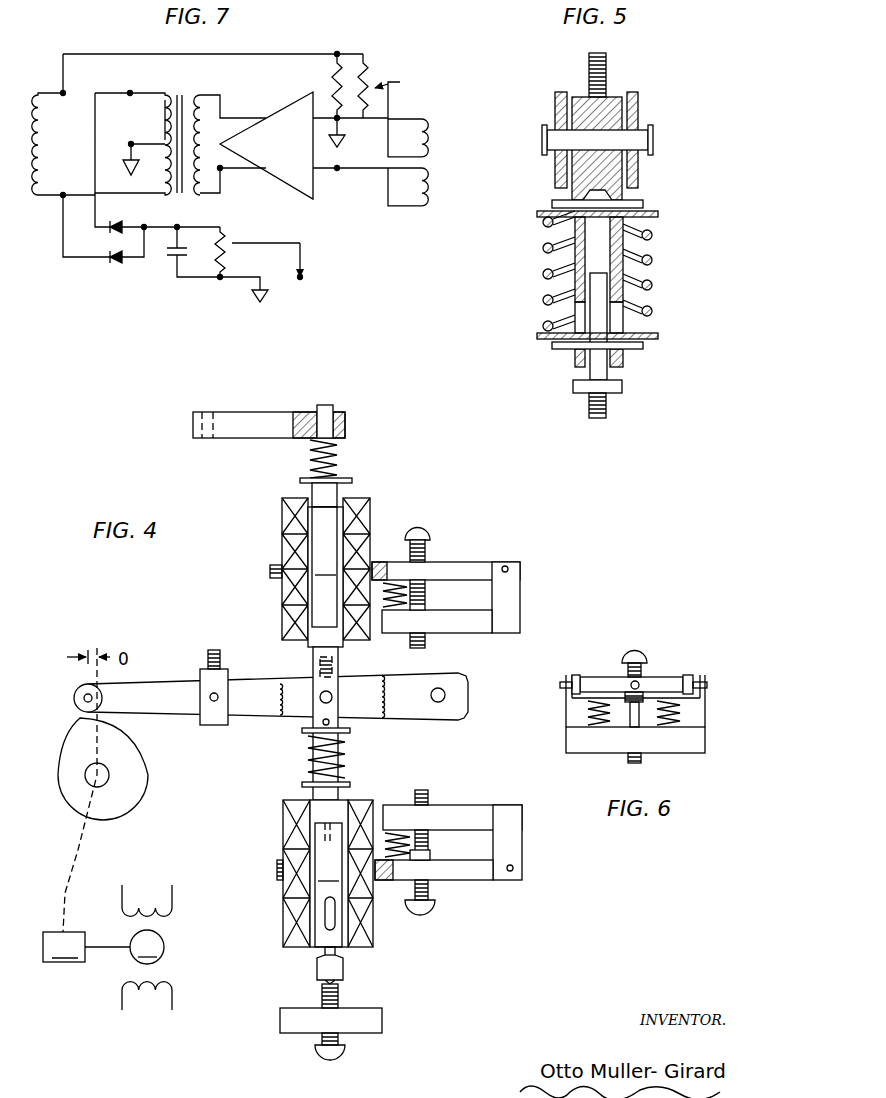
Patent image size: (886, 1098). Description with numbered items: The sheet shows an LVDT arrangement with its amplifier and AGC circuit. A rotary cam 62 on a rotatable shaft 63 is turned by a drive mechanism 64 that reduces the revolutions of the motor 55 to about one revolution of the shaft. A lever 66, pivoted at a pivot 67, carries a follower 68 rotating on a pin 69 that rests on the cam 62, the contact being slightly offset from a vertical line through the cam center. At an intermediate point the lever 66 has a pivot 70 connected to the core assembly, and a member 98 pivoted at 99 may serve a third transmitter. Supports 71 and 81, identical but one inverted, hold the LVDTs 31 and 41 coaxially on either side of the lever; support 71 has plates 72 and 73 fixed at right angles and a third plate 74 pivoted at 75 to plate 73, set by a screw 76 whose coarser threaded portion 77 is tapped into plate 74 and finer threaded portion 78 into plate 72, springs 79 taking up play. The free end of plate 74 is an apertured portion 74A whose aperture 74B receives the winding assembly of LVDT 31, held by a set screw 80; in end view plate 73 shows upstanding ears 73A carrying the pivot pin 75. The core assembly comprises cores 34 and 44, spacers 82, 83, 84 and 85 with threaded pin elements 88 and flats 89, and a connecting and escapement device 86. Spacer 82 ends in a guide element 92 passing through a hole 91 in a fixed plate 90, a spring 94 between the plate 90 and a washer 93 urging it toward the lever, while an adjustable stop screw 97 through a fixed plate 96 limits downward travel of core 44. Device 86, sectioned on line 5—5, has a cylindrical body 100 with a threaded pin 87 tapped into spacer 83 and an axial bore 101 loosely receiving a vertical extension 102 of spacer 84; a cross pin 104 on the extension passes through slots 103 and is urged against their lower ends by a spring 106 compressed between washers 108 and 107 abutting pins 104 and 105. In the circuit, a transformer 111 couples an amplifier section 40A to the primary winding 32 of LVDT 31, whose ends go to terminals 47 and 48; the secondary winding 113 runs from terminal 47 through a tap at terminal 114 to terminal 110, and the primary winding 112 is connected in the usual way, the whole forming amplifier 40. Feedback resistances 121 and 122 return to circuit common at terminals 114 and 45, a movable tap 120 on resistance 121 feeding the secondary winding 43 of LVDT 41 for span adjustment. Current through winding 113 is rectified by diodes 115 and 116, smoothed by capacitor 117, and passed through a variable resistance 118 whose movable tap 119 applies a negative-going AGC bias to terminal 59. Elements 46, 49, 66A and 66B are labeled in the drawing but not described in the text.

In FIG. 7, the primary winding 32 is at (46, 77).
In FIG. 7, the terminal 48 is at (64, 92).
In FIG. 7, the terminal 47 is at (62, 197).
In FIG. 7, the terminal 110 is at (131, 92).
In FIG. 7, the transformer 111 is at (182, 93).
In FIG. 7, the primary winding 112 is at (201, 117).
In FIG. 7, the secondary winding 113 is at (165, 118).
In FIG. 7, the terminal 114 is at (136, 132).
In FIG. 7, the amplifier section 40A is at (266, 145).
In FIG. 7, the amplifier 40 is at (230, 178).
In FIG. 7, the secondary winding 43 is at (425, 123).
In FIG. 7, the terminal 45 is at (340, 122).
In FIG. 7, the output terminal 46 is at (340, 172).
In FIG. 7, the rectifier 49 is at (136, 265).
In FIG. 7, the diode 115 is at (107, 229).
In FIG. 7, the diode 116 is at (107, 259).
In FIG. 7, the capacitor 117 is at (172, 258).
In FIG. 7, the variable resistance 118 is at (218, 265).
In FIG. 7, the movable tap 119 is at (235, 242).
In FIG. 7, the movable tap 120 is at (400, 82).
In FIG. 7, the feedback resistance 121 is at (367, 77).
In FIG. 7, the feedback resistance 122 is at (339, 65).
In FIG. 7, the terminal 59 is at (302, 279).
In FIG. 5, the threaded pin 87 is at (607, 72).
In FIG. 4, the threaded pin 87 is at (318, 665).
In FIG. 5, the sleeve half 66B is at (639, 103).
In FIG. 4, the sleeve half 66B is at (365, 700).
In FIG. 5, the sleeve half 66A is at (556, 172).
In FIG. 4, the sleeve half 66A is at (425, 713).
In FIG. 5, the pivot 70 is at (654, 136).
In FIG. 4, the pivot 70 is at (320, 701).
In FIG. 5, the cylindrical body 100 is at (625, 192).
In FIG. 4, the cylindrical body 100 is at (318, 756).
In FIG. 5, the cross pin 105 is at (644, 204).
In FIG. 4, the cross pin 105 is at (351, 730).
In FIG. 5, the washer 107 is at (650, 216).
In FIG. 4, the washer 107 is at (312, 736).
In FIG. 5, the axial bore 101 is at (597, 233).
In FIG. 5, the connecting and escapement device 86 is at (534, 250).
In FIG. 4, the connecting and escapement device 86 is at (362, 751).
In FIG. 5, the spring 106 is at (650, 287).
In FIG. 4, the spring 106 is at (318, 771).
In FIG. 5, the vertically extending slots 103 is at (580, 320).
In FIG. 5, the cross pin 104 is at (640, 353).
In FIG. 4, the cross pin 104 is at (325, 790).
In FIG. 5, the washer 108 is at (545, 339).
In FIG. 4, the washer 108 is at (346, 784).
In FIG. 5, the vertical extension 102 is at (608, 372).
In FIG. 5, the spacer 84 is at (623, 386).
In FIG. 4, the spacer 84 is at (336, 791).
In FIG. 4, the fixed plate 90 is at (258, 432).
In FIG. 4, the hole 91 is at (203, 420).
In FIG. 4, the vertical guide element 92 is at (330, 406).
In FIG. 4, the washer 93 is at (340, 472).
In FIG. 4, the spring 94 is at (344, 440).
In FIG. 4, the spacer 82 is at (338, 490).
In FIG. 4, the LVDT 31 is at (280, 527).
In FIG. 4, the core 34 is at (325, 577).
In FIG. 4, the apertured portion 74A is at (276, 566).
In FIG. 4, the set screw 80 is at (275, 578).
In FIG. 6, the set screw 80 is at (640, 684).
In FIG. 4, the LVDT support 71 is at (524, 571).
In FIG. 4, the third plate 74 is at (474, 568).
In FIG. 4, the plate 73 is at (522, 600).
In FIG. 4, the plate 72 is at (455, 630).
In FIG. 6, the plate 72 is at (701, 746).
In FIG. 4, the pivot 75 is at (508, 568).
In FIG. 6, the pivot 75 is at (708, 690).
In FIG. 4, the screw 76 is at (410, 527).
In FIG. 6, the screw 76 is at (646, 656).
In FIG. 4, the threaded portion 77 is at (428, 552).
In FIG. 6, the threaded portion 77 is at (620, 672).
In FIG. 4, the threaded portion 78 is at (425, 601).
In FIG. 6, the threaded portion 78 is at (632, 715).
In FIG. 4, the springs 79 is at (385, 608).
In FIG. 6, the springs 79 is at (682, 710).
In FIG. 4, the lever 66 is at (140, 684).
In FIG. 4, the follower 68 is at (75, 693).
In FIG. 4, the pin 69 is at (83, 700).
In FIG. 4, the pivot 67 is at (447, 695).
In FIG. 4, the rotary cam 62 is at (150, 778).
In FIG. 4, the rotatable shaft 63 is at (79, 853).
In FIG. 4, the drive mechanism 64 is at (86, 947).
In FIG. 4, the motor 55 is at (147, 947).
In FIG. 4, the member 98 is at (205, 672).
In FIG. 4, the pivot 99 is at (214, 706).
In FIG. 4, the spacer 83 is at (338, 656).
In FIG. 4, the section line 5 is at (290, 655).
In FIG. 4, the LVDT 41 is at (280, 921).
In FIG. 4, the core 44 is at (329, 873).
In FIG. 4, the threaded pin elements 88 is at (322, 905).
In FIG. 4, the flats 89 is at (320, 648).
In FIG. 4, the spacer 85 is at (345, 972).
In FIG. 4, the fixed plate 96 is at (383, 1019).
In FIG. 4, the adjustable stop screw 97 is at (340, 1052).
In FIG. 4, the LVDT support 81 is at (530, 841).
In FIG. 6, the aperture 74B is at (590, 680).
In FIG. 6, the upstanding ears 73A is at (707, 680).